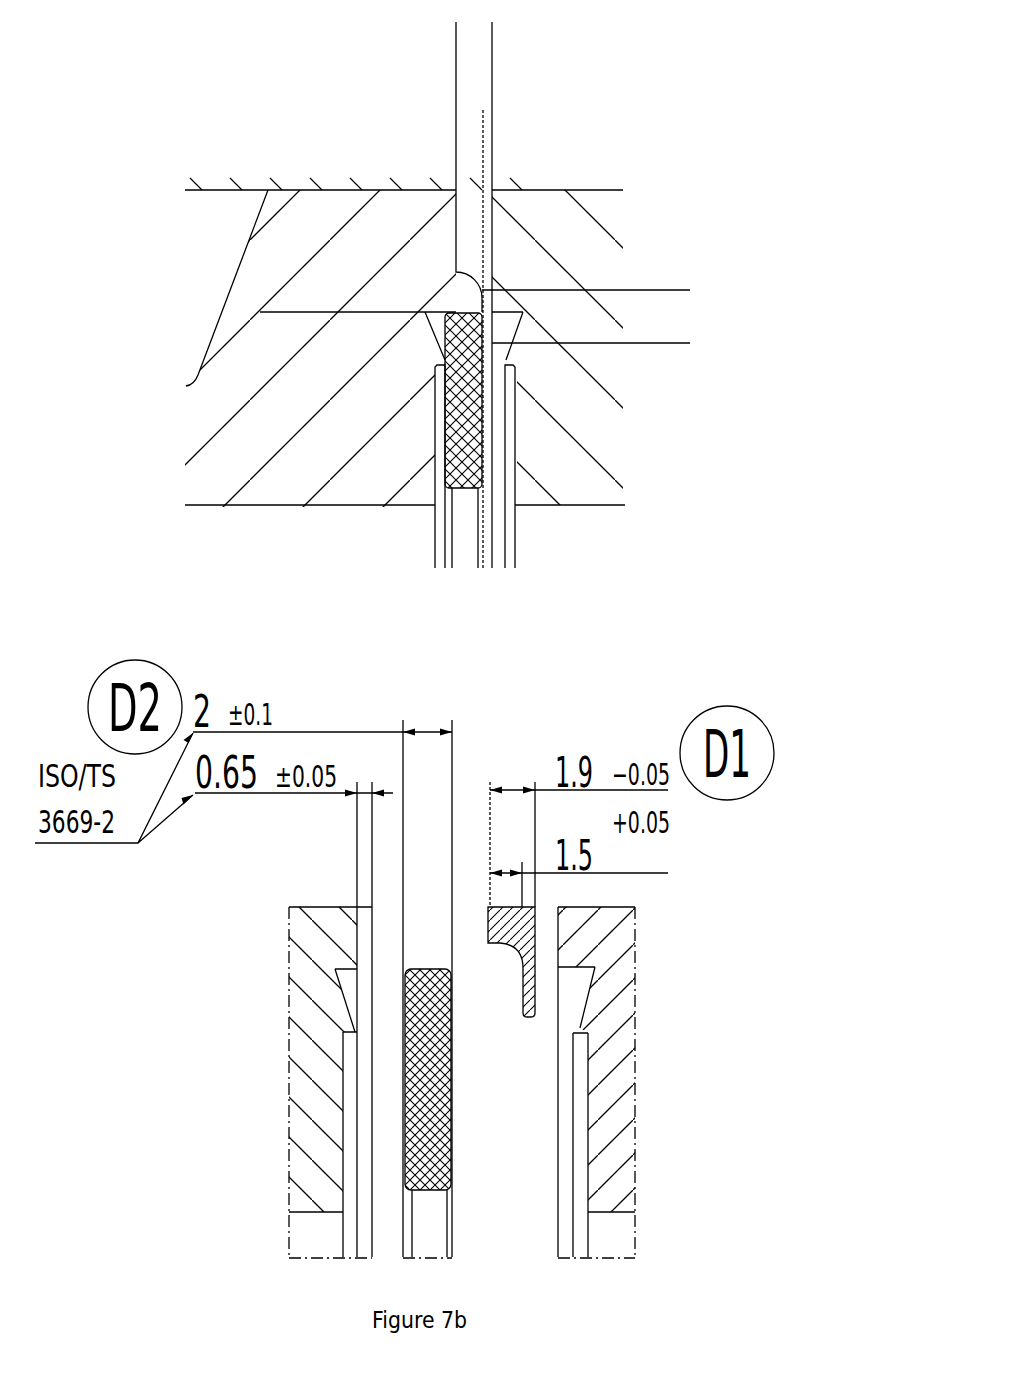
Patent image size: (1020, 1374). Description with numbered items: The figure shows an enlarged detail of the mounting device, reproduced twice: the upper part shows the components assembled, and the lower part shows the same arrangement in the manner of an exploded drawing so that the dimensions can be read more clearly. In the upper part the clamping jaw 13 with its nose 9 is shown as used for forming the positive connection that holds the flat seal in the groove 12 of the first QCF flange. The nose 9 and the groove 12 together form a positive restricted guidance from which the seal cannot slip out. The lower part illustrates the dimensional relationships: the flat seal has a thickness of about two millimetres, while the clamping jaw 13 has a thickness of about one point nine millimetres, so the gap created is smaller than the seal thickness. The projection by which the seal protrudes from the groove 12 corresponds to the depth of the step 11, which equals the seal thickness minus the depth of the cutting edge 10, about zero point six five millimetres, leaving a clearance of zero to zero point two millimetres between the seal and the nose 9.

The nose 9 is at (672, 290).
The cutting edge 10 is at (440, 357).
The step 11 is at (410, 128).
The groove 12 is at (280, 312).
The clamping jaw 13 is at (410, 42).